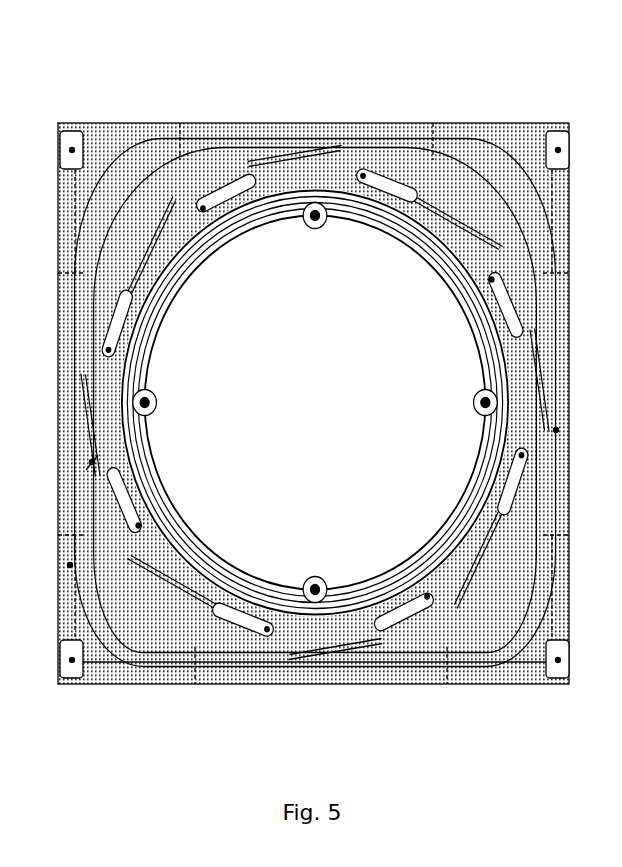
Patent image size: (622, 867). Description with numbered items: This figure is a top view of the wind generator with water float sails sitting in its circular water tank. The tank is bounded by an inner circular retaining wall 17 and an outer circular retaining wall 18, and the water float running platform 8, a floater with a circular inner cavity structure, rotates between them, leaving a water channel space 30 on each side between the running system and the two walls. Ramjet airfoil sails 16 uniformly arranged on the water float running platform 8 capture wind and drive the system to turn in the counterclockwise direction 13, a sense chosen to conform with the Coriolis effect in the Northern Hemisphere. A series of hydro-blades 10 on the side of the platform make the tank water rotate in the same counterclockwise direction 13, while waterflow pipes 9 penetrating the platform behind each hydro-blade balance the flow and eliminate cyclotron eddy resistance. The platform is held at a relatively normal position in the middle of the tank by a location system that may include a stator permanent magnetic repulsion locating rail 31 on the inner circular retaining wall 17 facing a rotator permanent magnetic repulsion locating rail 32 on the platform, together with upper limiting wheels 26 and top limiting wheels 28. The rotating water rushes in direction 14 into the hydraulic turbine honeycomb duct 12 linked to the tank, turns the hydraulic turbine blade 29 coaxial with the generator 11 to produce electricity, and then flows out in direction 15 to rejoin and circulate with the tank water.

The water float running platform 8 is at (362, 575).
The waterflow pipes 9 is at (273, 684).
The hydro-blades 10 is at (310, 684).
The generator 11 is at (88, 128).
The hydraulic turbine honeycomb duct 12 is at (68, 180).
The counterclockwise direction 13 is at (314, 403).
The direction 14 is at (90, 460).
The direction 15 is at (178, 684).
The ramjet airfoil sails 16 is at (314, 402).
The inner circular retaining wall 17 is at (315, 403).
The outer circular retaining wall 18 is at (247, 123).
The upper limiting wheels 26 is at (315, 403).
The top limiting wheels 28 is at (315, 403).
The hydraulic turbine blade 29 is at (68, 566).
The water channel space 30 is at (558, 431).
The stator permanent magnetic repulsion locating rail 31 is at (315, 403).
The rotator permanent magnetic repulsion locating rail 32 is at (315, 403).